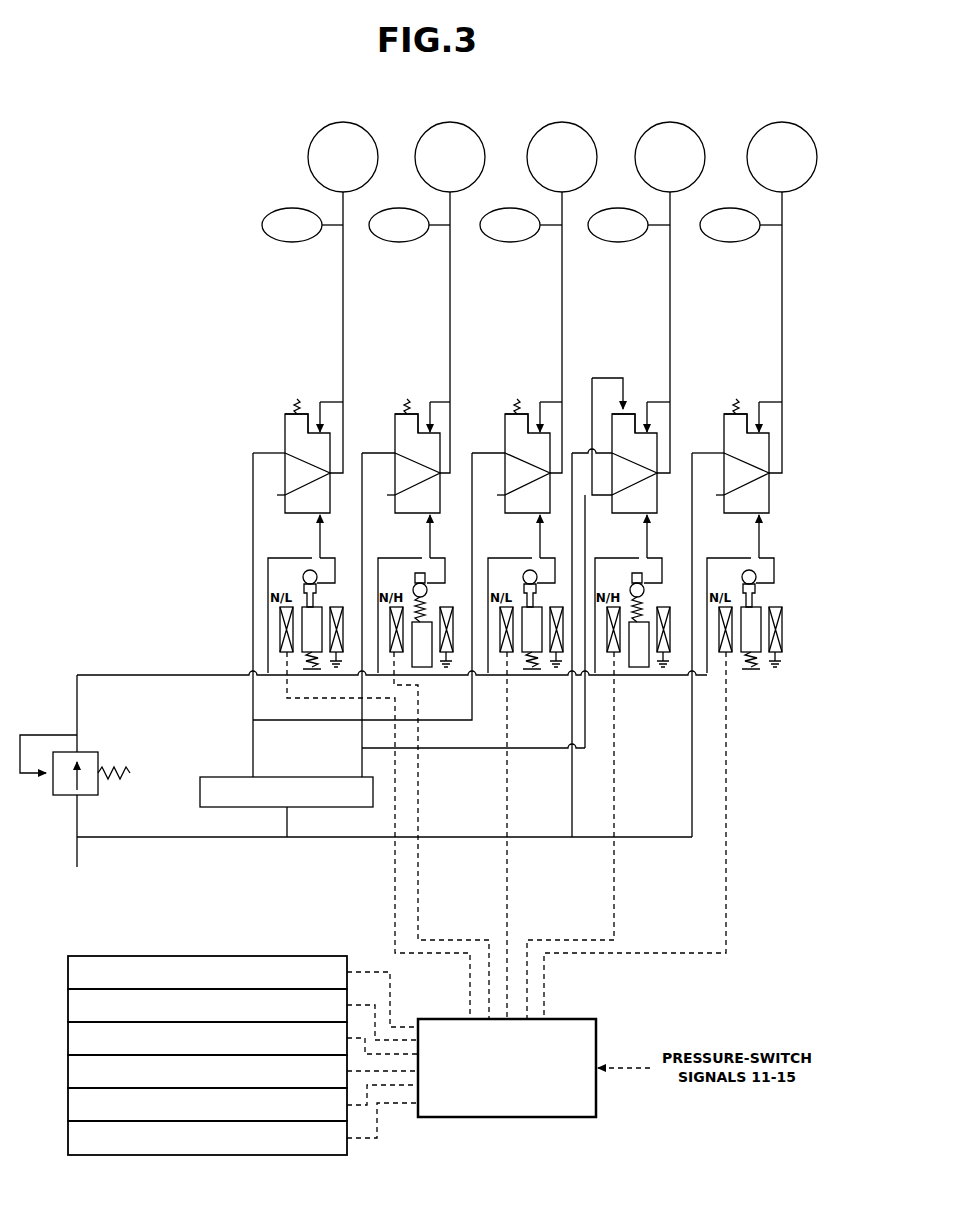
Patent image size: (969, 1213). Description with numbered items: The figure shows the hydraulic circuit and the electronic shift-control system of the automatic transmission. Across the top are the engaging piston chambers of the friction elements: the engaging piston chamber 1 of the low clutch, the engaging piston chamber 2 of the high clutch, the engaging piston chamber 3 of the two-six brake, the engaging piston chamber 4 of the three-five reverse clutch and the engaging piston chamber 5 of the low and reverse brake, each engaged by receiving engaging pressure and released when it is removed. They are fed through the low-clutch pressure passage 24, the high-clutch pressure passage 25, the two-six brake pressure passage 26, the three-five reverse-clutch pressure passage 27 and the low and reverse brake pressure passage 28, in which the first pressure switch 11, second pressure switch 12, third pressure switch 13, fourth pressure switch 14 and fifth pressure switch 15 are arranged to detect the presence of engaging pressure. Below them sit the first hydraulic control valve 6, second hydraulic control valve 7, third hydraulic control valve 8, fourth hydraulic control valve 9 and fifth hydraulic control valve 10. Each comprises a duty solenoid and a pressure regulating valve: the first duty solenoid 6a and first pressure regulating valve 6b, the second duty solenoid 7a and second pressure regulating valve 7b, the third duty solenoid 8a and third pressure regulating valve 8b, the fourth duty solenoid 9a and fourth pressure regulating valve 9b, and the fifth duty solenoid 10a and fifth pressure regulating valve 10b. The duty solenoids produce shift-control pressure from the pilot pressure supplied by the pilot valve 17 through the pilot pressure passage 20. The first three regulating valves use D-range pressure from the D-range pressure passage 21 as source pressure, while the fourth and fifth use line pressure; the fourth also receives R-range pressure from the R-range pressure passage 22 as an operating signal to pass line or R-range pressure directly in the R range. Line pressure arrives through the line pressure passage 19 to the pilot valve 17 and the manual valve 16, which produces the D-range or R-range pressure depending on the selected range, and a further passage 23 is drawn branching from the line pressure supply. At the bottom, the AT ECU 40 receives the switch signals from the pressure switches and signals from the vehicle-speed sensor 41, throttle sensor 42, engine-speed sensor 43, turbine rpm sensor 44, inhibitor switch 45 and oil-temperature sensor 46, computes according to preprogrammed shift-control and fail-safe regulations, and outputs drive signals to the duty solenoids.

The engaging piston chamber of the low clutch 1 is at (367, 132).
The engaging piston chamber of the high clutch 2 is at (474, 132).
The engaging piston chamber of the 2-6 brake 3 is at (587, 132).
The engaging piston chamber of the 3-5 reverse clutch 4 is at (695, 132).
The engaging piston chamber of the low & reverse brake 5 is at (807, 132).
The first hydraulic control valve 6 is at (311, 387).
The first duty solenoid 6a is at (304, 547).
The first pressure regulating valve 6b is at (281, 430).
The second hydraulic control valve 7 is at (421, 387).
The second duty solenoid 7a is at (414, 547).
The second pressure regulating valve 7b is at (391, 430).
The third hydraulic control valve 8 is at (532, 387).
The third duty solenoid 8a is at (522, 547).
The third pressure regulating valve 8b is at (501, 430).
The fourth hydraulic control valve 9 is at (586, 367).
The fourth duty solenoid 9a is at (631, 547).
The fourth pressure regulating valve 9b is at (637, 392).
The fifth hydraulic control valve 10 is at (732, 387).
The fifth duty solenoid 10a is at (751, 547).
The fifth pressure regulating valve 10b is at (720, 430).
The first pressure switch 11 is at (289, 208).
The second pressure switch 12 is at (397, 208).
The third pressure switch 13 is at (508, 208).
The fourth pressure switch 14 is at (616, 208).
The fifth pressure switch 15 is at (727, 208).
The manual valve 16 is at (312, 808).
The pilot valve 17 is at (72, 796).
The line pressure passage 19 is at (146, 837).
The pilot pressure passage 20 is at (186, 675).
The D-range pressure passage 21 is at (438, 720).
The R-range pressure passage 22 is at (533, 748).
The line pressure passage 23 is at (690, 723).
The low-clutch pressure passage 24 is at (343, 295).
The high-clutch pressure passage 25 is at (450, 295).
The 2-6 brake pressure passage 26 is at (562, 295).
The 3-5 reverse-clutch pressure passage 27 is at (670, 295).
The low & reverse brake pressure passage 28 is at (782, 295).
The automatic transmission electronic control unit 40 is at (598, 1032).
The vehicle-speed sensor 41 is at (68, 972).
The throttle sensor 42 is at (68, 1005).
The engine-speed sensor 43 is at (68, 1038).
The turbine rpm sensor 44 is at (68, 1071).
The inhibitor switch 45 is at (68, 1105).
The oil-temperature sensor 46 is at (68, 1138).